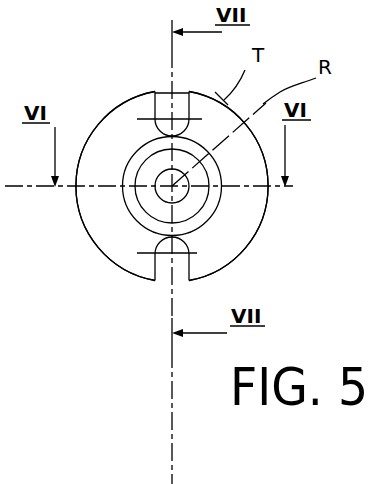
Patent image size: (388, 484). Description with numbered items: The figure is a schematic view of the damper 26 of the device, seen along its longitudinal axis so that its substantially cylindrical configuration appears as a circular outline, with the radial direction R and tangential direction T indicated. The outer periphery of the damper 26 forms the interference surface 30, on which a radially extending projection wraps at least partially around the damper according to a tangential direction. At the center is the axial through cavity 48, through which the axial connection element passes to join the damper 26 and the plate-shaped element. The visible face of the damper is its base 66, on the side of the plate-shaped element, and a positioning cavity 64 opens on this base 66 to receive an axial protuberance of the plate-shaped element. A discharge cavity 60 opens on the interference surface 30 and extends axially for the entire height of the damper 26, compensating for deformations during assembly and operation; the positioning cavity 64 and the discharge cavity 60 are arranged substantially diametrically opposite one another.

The damper 26 is at (248, 109).
The interference surface 30 is at (254, 248).
The axial through cavity 48 is at (147, 225).
The discharge cavity 60 is at (158, 265).
The positioning cavity 64 is at (167, 118).
The base 66 is at (108, 217).